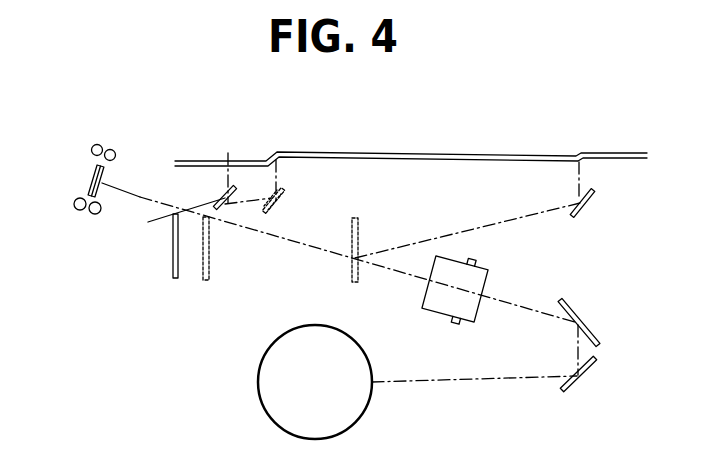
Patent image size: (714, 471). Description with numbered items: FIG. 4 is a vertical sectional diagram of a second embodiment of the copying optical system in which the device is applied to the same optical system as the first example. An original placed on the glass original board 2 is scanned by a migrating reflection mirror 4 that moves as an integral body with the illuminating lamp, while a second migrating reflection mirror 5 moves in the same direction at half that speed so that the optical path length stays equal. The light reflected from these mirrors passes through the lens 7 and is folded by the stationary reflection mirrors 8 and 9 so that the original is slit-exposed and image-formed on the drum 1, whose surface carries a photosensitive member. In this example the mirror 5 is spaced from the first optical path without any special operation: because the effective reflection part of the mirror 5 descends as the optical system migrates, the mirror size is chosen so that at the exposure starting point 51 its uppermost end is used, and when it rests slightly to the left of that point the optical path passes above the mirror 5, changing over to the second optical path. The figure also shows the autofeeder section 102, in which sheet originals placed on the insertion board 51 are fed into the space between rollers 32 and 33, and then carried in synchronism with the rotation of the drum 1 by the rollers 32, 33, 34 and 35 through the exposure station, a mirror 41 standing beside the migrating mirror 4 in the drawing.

The drum 1 is at (270, 397).
The original board 2 is at (476, 157).
The migrating reflection mirror 4 is at (210, 181).
The mirror 41 is at (288, 200).
The migrating reflection mirror 5 is at (173, 264).
The sheet original insertion board 51 is at (210, 245).
The lens 7 is at (480, 281).
The stationary reflection mirror 8 is at (590, 333).
The stationary reflection mirror 9 is at (582, 378).
The roller 32 is at (91, 151).
The roller 33 is at (116, 153).
The roller 34 is at (80, 211).
The roller 35 is at (97, 214).
The autofeeder section 102 is at (83, 140).